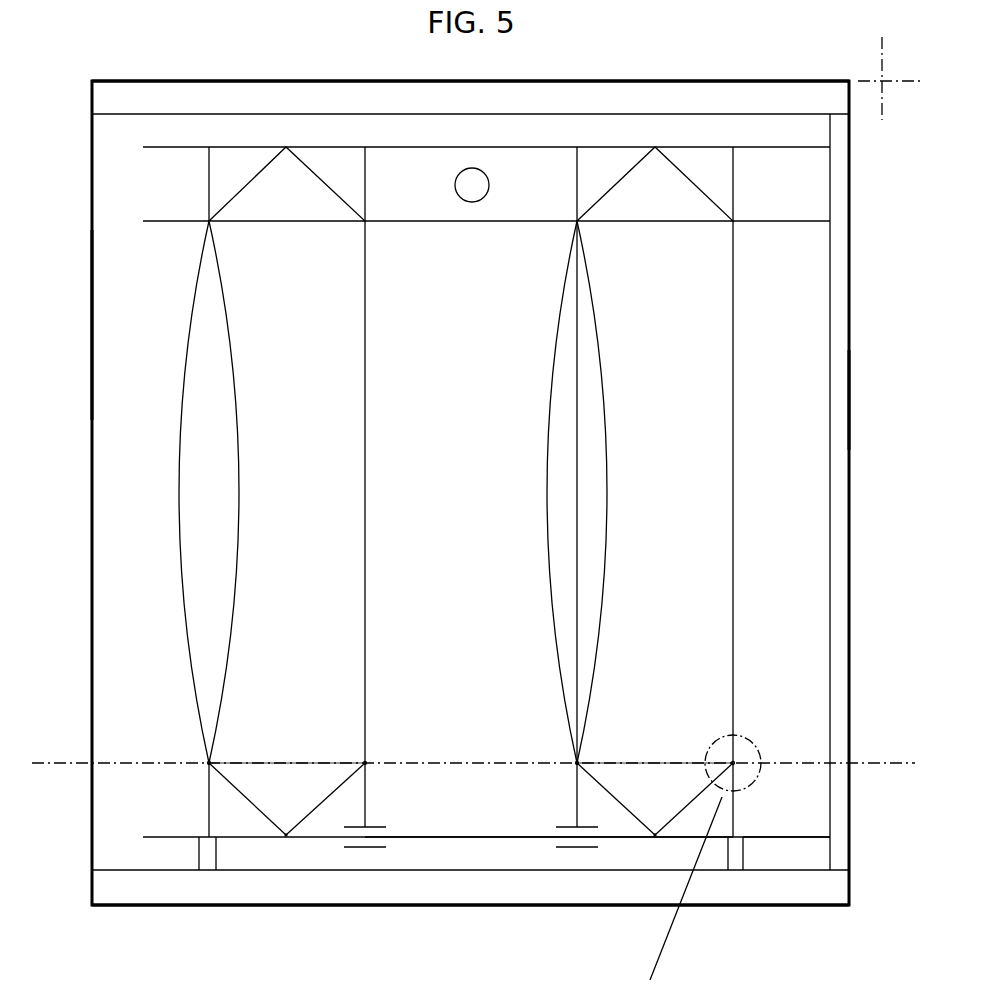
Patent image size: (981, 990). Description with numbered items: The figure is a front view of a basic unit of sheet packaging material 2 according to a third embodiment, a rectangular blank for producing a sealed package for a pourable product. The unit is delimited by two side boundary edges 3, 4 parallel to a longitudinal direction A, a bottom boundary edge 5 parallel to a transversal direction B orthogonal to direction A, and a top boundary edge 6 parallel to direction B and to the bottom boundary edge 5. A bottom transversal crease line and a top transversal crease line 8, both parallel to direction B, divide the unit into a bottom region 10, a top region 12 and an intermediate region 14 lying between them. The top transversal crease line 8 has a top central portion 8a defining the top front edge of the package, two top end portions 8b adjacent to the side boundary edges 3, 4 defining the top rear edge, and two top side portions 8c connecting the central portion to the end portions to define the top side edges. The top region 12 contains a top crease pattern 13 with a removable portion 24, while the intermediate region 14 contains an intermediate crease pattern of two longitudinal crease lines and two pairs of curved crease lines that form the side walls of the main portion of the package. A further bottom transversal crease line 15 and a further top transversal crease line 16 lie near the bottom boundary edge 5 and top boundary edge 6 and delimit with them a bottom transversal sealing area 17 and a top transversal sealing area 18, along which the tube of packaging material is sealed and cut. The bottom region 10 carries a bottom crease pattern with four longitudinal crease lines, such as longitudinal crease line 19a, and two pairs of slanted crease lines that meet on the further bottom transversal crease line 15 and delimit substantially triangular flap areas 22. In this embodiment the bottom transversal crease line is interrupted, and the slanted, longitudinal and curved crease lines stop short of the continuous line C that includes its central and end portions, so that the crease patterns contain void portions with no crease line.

The sheet packaging material 2 is at (115, 286).
The side boundary edge 3 is at (855, 402).
The side boundary edge 4 is at (92, 355).
The bottom boundary edge 5 is at (797, 908).
The top boundary edge 6 is at (727, 78).
The top transversal crease line 8 is at (760, 226).
The top central portion 8a is at (492, 226).
The top end portion 8b is at (167, 226).
The top side portion 8c is at (278, 226).
The bottom region 10 is at (478, 815).
The top region 12 is at (408, 163).
The top crease pattern 13 is at (276, 132).
The intermediate region 14 is at (800, 353).
The further bottom transversal crease line 15 is at (808, 833).
The further top transversal crease line 16 is at (768, 152).
The bottom transversal sealing area 17 is at (618, 885).
The top transversal sealing area 18 is at (608, 100).
The longitudinal crease line 19a is at (767, 828).
The triangular area 22 is at (275, 782).
The removable portion 24 is at (480, 168).
The longitudinal direction A is at (880, 54).
The transversal direction B is at (857, 85).
The continuous line C is at (893, 762).